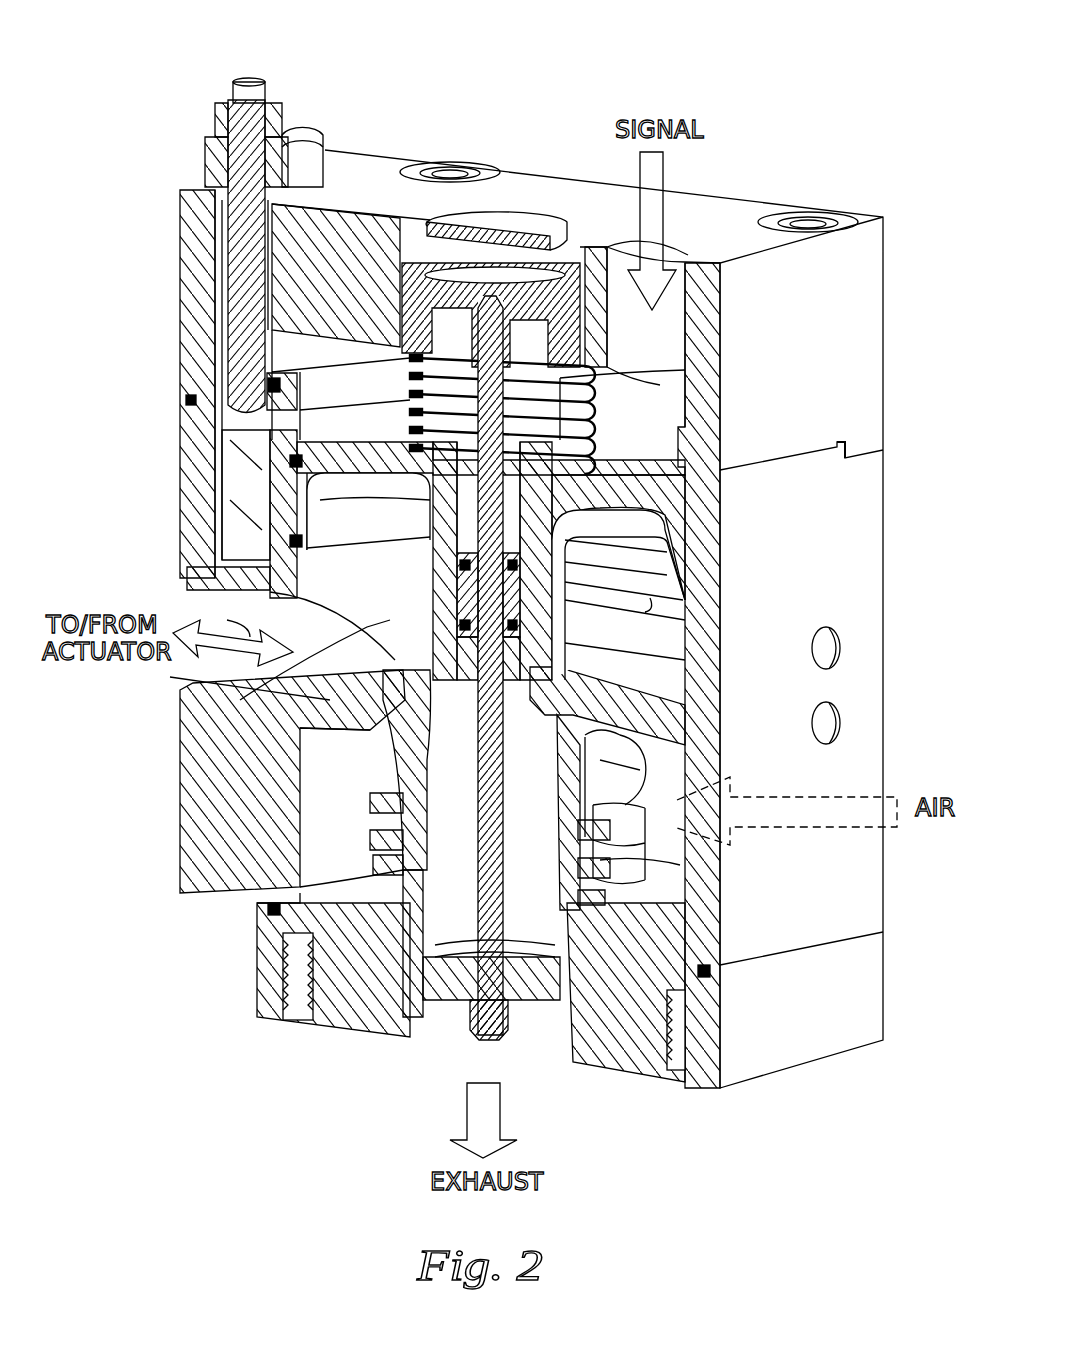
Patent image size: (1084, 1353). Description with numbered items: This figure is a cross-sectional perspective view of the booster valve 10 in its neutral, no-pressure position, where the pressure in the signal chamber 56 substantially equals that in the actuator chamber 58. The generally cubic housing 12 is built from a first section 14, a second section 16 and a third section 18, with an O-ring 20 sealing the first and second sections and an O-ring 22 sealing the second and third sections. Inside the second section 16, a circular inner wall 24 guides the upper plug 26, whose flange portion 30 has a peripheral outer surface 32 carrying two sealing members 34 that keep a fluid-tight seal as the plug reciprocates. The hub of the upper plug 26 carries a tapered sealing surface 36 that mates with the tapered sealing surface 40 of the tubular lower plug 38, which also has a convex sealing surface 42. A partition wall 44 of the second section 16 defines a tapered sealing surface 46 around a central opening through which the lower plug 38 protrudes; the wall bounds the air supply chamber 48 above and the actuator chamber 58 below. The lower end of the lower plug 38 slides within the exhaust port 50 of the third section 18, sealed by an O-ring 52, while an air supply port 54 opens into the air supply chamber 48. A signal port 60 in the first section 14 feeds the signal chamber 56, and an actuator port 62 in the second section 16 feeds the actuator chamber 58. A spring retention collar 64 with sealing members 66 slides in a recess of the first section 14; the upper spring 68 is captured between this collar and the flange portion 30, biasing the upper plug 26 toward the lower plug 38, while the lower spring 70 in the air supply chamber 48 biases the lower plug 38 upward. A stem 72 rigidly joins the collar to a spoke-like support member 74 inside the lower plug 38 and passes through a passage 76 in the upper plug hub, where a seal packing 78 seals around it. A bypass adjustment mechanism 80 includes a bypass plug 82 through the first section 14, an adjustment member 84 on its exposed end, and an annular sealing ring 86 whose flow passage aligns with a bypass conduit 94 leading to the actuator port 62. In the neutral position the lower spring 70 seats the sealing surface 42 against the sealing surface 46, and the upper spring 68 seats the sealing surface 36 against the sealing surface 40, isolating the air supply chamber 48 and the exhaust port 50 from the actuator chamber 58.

The booster valve 10 is at (786, 94).
The housing 12 is at (822, 614).
The first (upper) section 14 is at (858, 274).
The second (middle) section 16 is at (860, 620).
The third (lower) section 18 is at (825, 1048).
The O-ring 20 is at (700, 477).
The O-ring 22 is at (723, 1000).
The inner wall 24 is at (300, 562).
The upper plug 26 is at (278, 508).
The flange portion 30 is at (700, 512).
The peripheral outer surface 32 is at (290, 498).
The sealing members 34 is at (290, 462).
The tapered sealing surface 36 is at (700, 693).
The lower plug 38 is at (636, 777).
The tapered sealing surface 40 is at (330, 698).
The convex sealing surface 42 is at (700, 727).
The partition wall 44 is at (700, 758).
The tapered sealing surface 46 is at (300, 737).
The air supply chamber 48 is at (298, 887).
The exhaust port 50 is at (440, 1016).
The O-ring 52 is at (583, 1032).
The air supply port 54 is at (700, 858).
The signal chamber 56 is at (700, 417).
The actuator chamber 58 is at (700, 610).
The signal port 60 is at (677, 256).
The actuator port 62 is at (240, 675).
The spring retention collar 64 is at (472, 240).
The sealing members 66 is at (372, 275).
The upper spring 68 is at (405, 360).
The lower spring 70 is at (392, 862).
The stem 72 is at (492, 298).
The support member 74 is at (532, 993).
The passage 76 is at (242, 592).
The seal packing 78 is at (460, 596).
The bypass adjustment mechanism 80 is at (283, 99).
The bypass plug 82 is at (222, 194).
The adjustment member 84 is at (222, 118).
The sealing ring 86 is at (268, 385).
The bypass conduit 94 is at (238, 478).